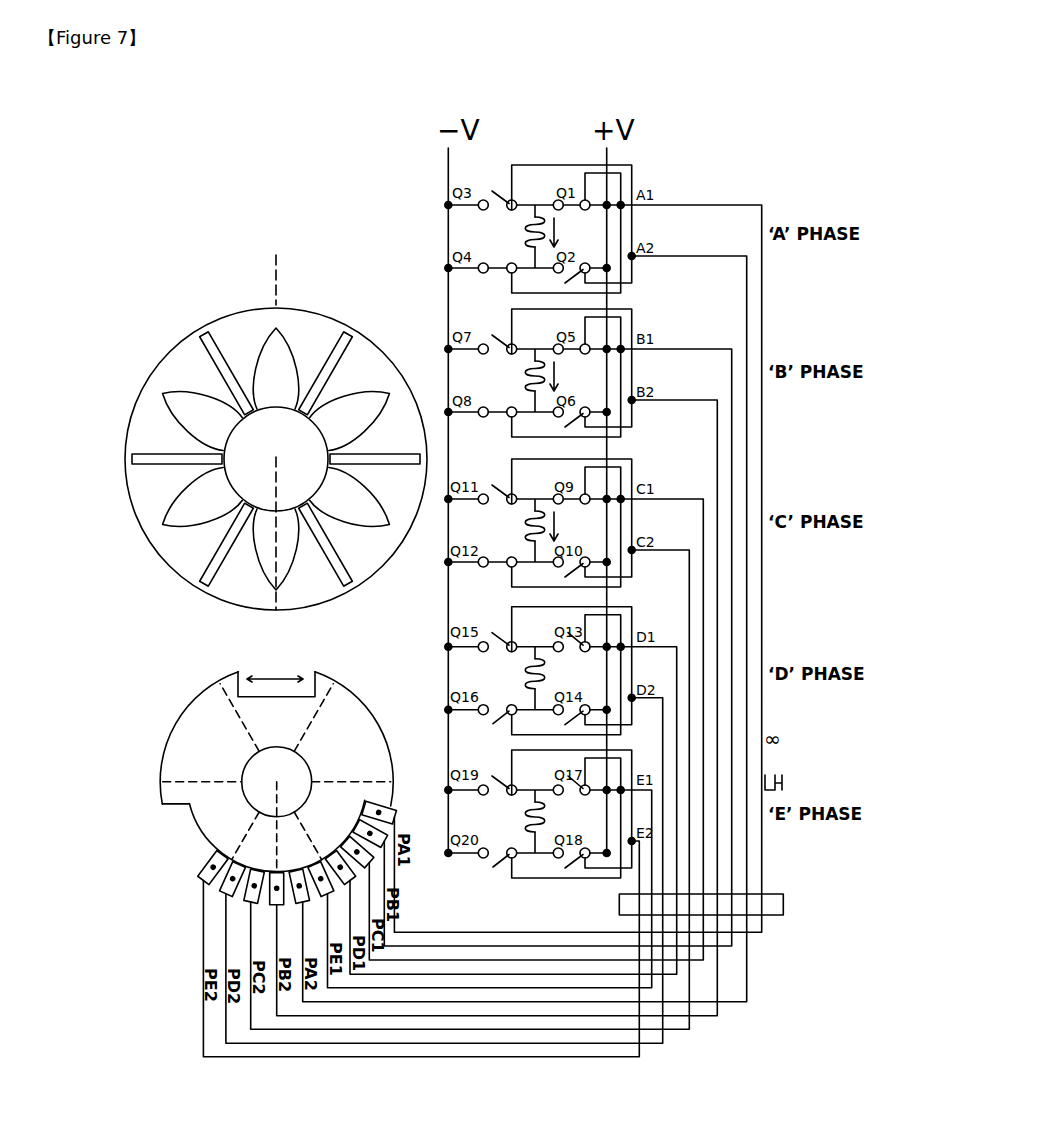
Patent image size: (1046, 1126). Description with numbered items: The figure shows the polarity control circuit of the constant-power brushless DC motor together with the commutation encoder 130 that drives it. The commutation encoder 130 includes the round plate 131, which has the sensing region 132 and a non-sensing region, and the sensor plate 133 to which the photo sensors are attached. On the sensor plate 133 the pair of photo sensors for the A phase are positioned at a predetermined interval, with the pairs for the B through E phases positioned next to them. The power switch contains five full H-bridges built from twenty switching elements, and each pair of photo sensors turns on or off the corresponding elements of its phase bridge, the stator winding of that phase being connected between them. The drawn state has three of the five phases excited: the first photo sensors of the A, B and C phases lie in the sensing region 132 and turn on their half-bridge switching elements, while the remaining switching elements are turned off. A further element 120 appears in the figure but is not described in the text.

The rotor 120 is at (147, 402).
The commutation encoder 130 is at (168, 727).
The round plate 131 is at (158, 767).
The sensing region 132 is at (277, 672).
The sensor plate 133 is at (197, 873).